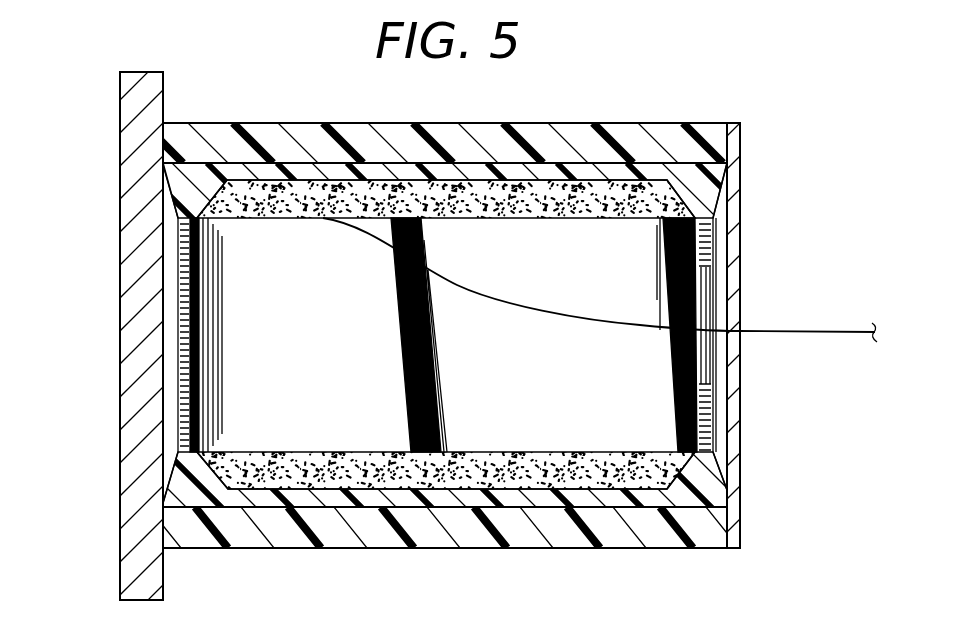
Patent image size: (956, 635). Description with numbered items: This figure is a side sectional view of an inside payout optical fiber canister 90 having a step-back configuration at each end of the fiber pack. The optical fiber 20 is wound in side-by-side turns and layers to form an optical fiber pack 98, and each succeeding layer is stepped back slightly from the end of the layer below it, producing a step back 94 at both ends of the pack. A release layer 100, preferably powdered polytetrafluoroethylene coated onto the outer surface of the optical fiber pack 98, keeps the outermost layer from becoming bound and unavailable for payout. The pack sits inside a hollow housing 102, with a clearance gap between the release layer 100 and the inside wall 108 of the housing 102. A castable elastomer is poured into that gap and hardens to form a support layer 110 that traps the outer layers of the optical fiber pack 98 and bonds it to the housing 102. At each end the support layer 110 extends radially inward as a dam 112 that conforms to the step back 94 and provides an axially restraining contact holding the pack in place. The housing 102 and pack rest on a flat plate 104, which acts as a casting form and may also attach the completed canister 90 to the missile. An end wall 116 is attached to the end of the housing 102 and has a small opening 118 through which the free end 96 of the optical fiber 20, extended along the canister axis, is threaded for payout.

The inside payout optical fiber canister 90 is at (281, 64).
The housing 102 is at (247, 135).
The support layer 110 is at (374, 178).
The dam 112 is at (183, 190).
The step back 94 is at (218, 198).
The optical fiber 20 is at (490, 297).
The free end 96 is at (846, 332).
The opening 118 is at (730, 350).
The end wall 116 is at (740, 418).
The flat plate 104 is at (120, 411).
The optical fiber pack 98 is at (273, 470).
The release layer 100 is at (297, 492).
The inside wall 108 is at (495, 505).